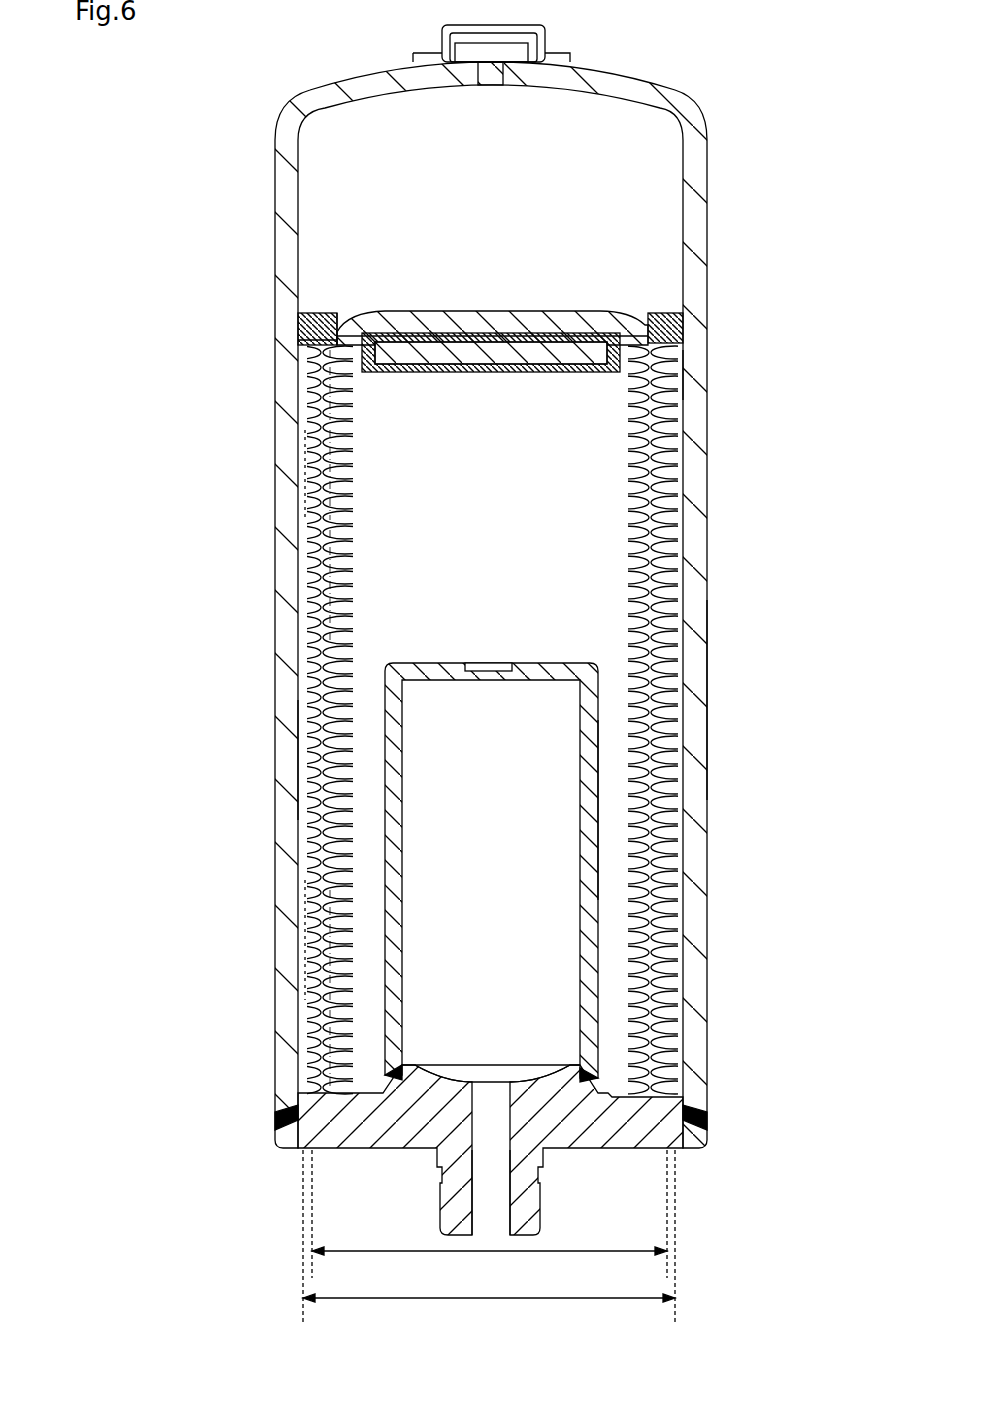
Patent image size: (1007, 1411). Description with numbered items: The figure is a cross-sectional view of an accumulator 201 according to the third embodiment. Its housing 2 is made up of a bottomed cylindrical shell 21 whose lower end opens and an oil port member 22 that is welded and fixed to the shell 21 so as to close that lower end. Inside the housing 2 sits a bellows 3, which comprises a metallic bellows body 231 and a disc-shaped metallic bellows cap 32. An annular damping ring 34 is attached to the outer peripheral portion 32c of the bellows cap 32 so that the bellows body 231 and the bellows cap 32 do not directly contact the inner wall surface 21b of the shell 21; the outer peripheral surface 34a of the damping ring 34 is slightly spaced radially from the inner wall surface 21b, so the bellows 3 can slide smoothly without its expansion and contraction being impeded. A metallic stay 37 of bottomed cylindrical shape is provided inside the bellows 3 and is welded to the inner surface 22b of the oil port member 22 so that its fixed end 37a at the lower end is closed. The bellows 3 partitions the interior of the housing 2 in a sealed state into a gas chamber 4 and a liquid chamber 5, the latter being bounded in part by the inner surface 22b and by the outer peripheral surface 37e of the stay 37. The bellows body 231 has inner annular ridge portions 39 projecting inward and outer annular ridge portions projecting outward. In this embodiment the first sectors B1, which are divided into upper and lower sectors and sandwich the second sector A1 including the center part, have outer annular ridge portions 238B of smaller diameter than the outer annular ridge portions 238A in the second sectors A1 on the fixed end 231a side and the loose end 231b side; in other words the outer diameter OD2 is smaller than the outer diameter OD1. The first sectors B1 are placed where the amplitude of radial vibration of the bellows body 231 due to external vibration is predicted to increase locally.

The accumulator 201 is at (295, 74).
The housing 2 is at (716, 295).
The shell 21 is at (691, 100).
The inner wall surface 21b is at (299, 762).
The oil port member 22 is at (706, 1160).
The inner surface 22b is at (600, 1116).
The bellows body 231 is at (689, 718).
The fixed end 231a is at (692, 1110).
The loose end 231b is at (663, 384).
The bellows 3 is at (607, 306).
The bellows cap 32 is at (521, 306).
The outer peripheral portion 32c is at (339, 312).
The damping ring 34 is at (317, 305).
The outer peripheral surface 34a is at (299, 340).
The gas chamber 4 is at (409, 169).
The liquid chamber 5 is at (409, 471).
The stay 37 is at (433, 657).
The fixed end 37a is at (418, 1094).
The outer peripheral surface 37e is at (599, 801).
The inner annular ridge portions 39 is at (630, 631).
The outer annular ridge portions 238A is at (320, 406).
The outer annular ridge portions 238B is at (320, 521).
The second sector A1 is at (305, 373).
The first sector B1 is at (310, 441).
The outer diameter OD1 is at (489, 1241).
The outer diameter OD2 is at (489, 1217).